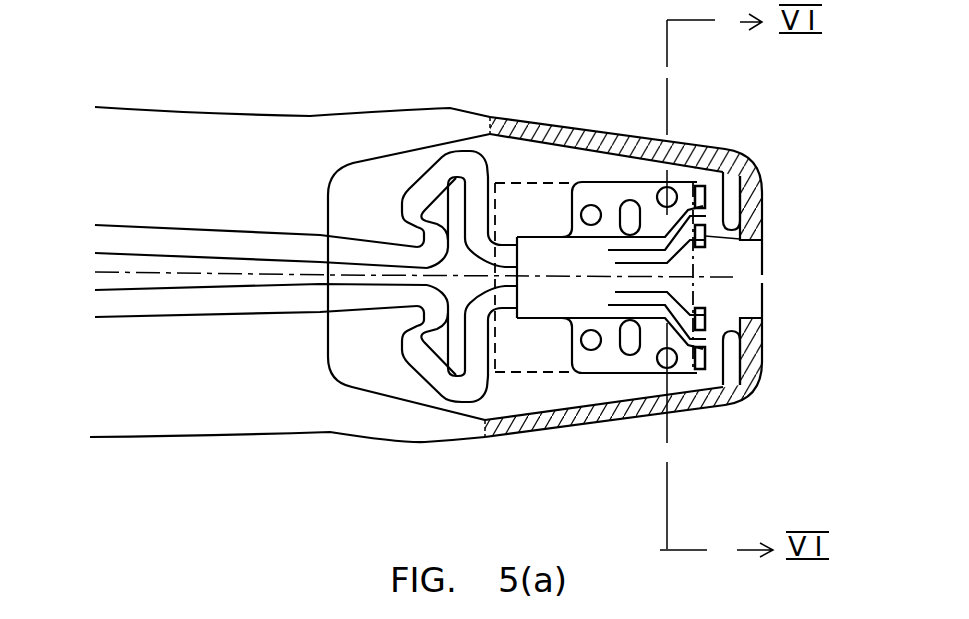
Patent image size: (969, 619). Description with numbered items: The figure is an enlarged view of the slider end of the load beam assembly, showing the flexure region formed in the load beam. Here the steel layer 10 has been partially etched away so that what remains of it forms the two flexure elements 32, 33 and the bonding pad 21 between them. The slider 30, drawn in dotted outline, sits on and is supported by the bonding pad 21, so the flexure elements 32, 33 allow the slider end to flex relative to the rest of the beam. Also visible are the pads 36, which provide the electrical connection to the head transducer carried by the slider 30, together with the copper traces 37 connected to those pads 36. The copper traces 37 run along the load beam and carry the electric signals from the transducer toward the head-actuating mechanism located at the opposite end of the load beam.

The steel layer 10 is at (607, 128).
The bonding pad 21 is at (600, 190).
The slider 30 is at (523, 373).
The flexure element 32 is at (708, 144).
The flexure element 33 is at (665, 405).
The pads 36 is at (742, 380).
The copper traces 37 is at (745, 240).